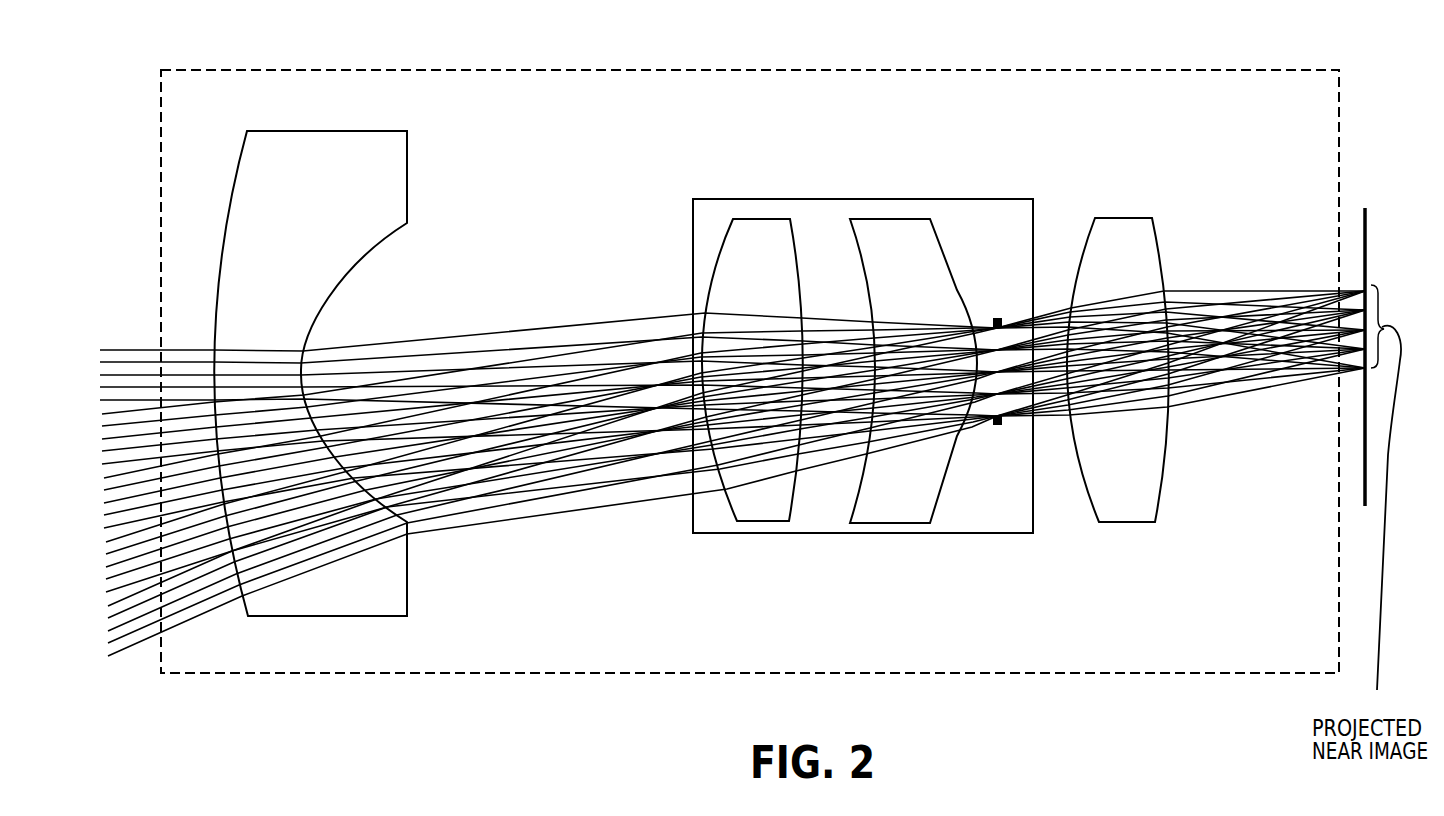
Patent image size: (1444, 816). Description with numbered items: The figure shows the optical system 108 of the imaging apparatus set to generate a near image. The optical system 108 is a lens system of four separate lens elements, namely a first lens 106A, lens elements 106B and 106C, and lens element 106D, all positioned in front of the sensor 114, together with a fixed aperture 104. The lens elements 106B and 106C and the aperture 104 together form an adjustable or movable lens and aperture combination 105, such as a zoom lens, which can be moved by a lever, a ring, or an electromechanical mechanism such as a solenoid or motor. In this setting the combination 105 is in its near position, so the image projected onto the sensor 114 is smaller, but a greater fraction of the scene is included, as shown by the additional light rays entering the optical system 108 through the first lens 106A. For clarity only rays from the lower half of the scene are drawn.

The aperture 104 is at (998, 309).
The lens and aperture combination 105 is at (902, 199).
The first lens 106A is at (435, 153).
The lens element 106B is at (820, 233).
The lens element 106C is at (963, 233).
The lens element 106D is at (1131, 216).
The optical system 108 is at (487, 70).
The sensor 114 is at (1386, 197).